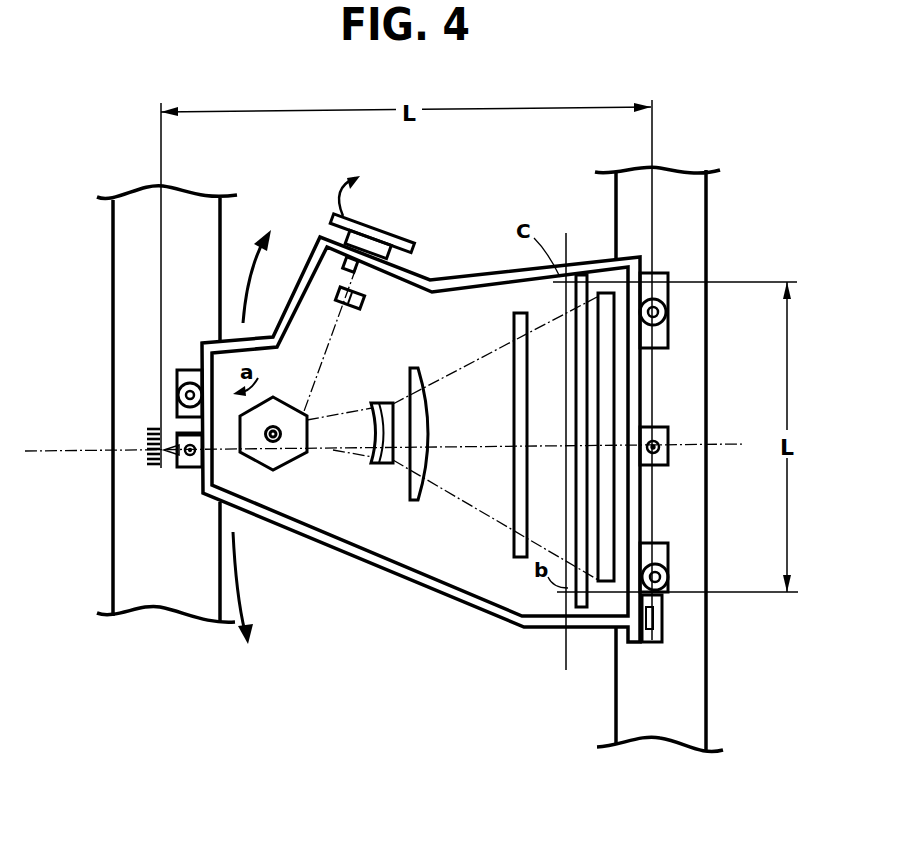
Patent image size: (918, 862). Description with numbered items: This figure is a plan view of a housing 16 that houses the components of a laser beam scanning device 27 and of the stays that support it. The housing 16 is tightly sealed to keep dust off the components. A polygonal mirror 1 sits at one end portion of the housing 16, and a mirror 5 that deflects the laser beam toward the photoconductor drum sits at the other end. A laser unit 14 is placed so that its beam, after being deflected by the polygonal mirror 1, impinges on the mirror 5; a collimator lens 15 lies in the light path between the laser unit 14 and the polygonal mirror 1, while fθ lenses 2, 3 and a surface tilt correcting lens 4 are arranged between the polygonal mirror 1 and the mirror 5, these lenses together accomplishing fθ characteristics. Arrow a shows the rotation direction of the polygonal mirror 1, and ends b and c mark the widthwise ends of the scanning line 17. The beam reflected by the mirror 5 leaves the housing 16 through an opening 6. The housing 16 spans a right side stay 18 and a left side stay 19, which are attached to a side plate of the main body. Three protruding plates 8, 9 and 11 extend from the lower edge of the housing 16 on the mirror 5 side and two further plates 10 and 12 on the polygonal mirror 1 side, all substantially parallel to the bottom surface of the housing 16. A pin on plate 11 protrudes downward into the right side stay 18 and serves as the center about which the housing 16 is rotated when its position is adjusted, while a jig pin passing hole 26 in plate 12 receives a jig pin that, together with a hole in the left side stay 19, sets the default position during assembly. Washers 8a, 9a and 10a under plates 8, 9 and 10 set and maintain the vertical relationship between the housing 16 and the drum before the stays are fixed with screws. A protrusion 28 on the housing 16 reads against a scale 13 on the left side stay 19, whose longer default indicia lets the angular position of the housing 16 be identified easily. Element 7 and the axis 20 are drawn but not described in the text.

The polygonal mirror 1 is at (285, 458).
The fθ lens 2 is at (378, 465).
The fθ lens 3 is at (413, 499).
The surface tilt correcting lens 4 is at (517, 559).
The mirror 5 is at (603, 583).
The opening 6 is at (583, 262).
The connector 7 is at (662, 627).
The protruding plate 8 is at (693, 324).
The washer 8a is at (668, 332).
The protruding plate 9 is at (692, 558).
The washer 9a is at (668, 572).
The protruding plate 10 is at (131, 355).
The washer 10a is at (193, 370).
The protruding plate 11 is at (668, 438).
The protruding plate 12 is at (183, 470).
The scale 13 is at (133, 467).
The laser unit 14 is at (378, 238).
The collimator lens 15 is at (365, 306).
The housing 16 is at (363, 556).
The scanning line 17 is at (566, 652).
The right side stay 18 is at (685, 715).
The left side stay 19 is at (171, 600).
The optical axis 20 is at (45, 450).
The jig pin passing hole 26 is at (183, 436).
The laser beam scanning device 27 is at (480, 205).
The protrusion 28 is at (166, 455).